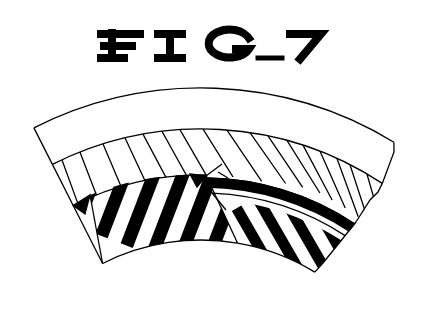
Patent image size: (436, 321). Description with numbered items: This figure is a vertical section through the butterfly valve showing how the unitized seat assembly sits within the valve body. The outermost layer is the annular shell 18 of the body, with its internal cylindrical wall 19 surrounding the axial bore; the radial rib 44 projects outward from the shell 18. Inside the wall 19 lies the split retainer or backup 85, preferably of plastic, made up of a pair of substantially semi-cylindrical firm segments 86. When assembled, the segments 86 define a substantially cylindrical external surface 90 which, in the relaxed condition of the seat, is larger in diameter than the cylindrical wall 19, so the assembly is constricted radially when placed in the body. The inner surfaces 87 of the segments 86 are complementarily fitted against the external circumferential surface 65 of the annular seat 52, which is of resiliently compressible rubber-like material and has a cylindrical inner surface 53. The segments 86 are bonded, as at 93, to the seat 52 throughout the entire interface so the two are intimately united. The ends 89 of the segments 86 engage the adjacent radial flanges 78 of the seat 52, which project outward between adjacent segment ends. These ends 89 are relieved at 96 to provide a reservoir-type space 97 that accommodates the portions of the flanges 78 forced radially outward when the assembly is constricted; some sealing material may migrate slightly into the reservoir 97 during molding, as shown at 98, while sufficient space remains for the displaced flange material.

The radial rib 44 is at (118, 100).
The split retainer or backup 85 is at (131, 179).
The annular shell 18 is at (72, 190).
The internal cylindrical wall 19 is at (88, 213).
The external circumferential surface 65 is at (108, 231).
The annular seat 52 is at (127, 262).
The backup segments 86 is at (104, 229).
The relief of the segment ends 96 is at (196, 180).
The inner surfaces of the backup segments 87 is at (323, 253).
The inner surface of the seat 53 is at (292, 262).
The cylindrical external surface 90 is at (287, 176).
The reservoir-type space 97 is at (212, 178).
The migrated sealing material 98 is at (222, 168).
The bond 93 is at (158, 215).
The radial flanges 78 is at (202, 214).
The ends of the backup segments 89 is at (228, 243).